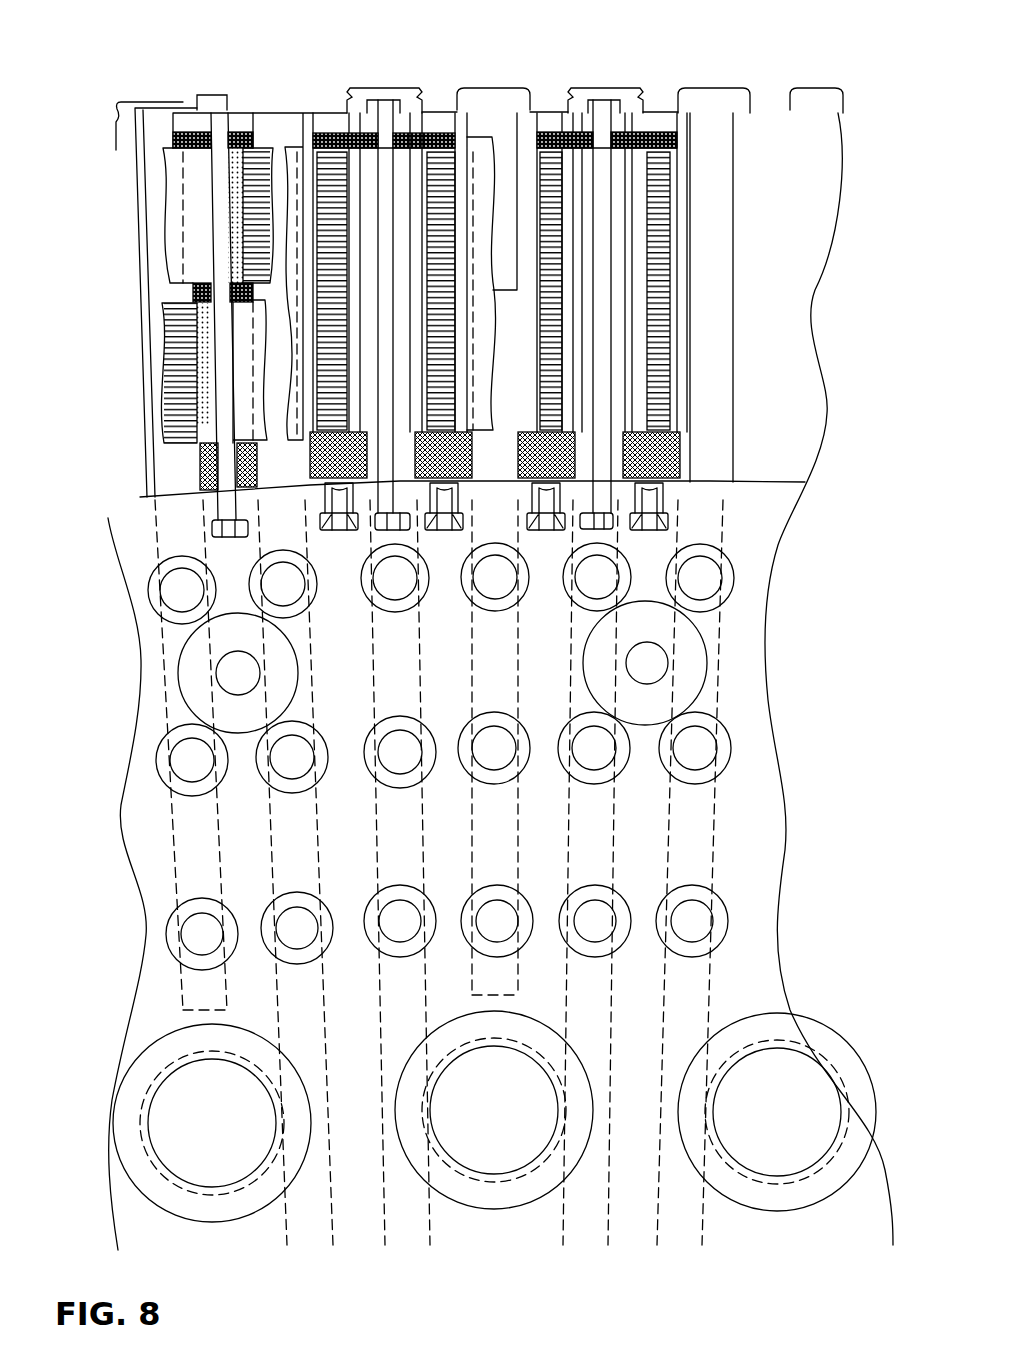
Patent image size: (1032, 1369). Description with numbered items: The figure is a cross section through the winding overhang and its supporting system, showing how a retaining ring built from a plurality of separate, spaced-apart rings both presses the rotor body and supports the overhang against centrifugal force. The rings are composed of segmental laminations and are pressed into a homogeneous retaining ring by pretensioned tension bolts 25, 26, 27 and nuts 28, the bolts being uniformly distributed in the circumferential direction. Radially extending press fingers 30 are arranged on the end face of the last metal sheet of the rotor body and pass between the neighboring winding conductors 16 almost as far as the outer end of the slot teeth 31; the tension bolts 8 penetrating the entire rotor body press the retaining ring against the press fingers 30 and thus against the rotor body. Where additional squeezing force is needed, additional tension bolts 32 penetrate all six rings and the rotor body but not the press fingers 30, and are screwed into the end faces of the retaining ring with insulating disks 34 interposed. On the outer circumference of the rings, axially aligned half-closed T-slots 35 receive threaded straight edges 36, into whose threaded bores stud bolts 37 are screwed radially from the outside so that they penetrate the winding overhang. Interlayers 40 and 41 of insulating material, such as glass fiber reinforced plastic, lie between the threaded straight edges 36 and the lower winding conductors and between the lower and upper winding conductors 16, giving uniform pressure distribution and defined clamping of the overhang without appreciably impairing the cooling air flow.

The tension bolts 8 is at (192, 1098).
The winding conductors 16 is at (228, 207).
The tension bolt 25 is at (182, 590).
The tension bolt 26 is at (192, 760).
The tension bolt 27 is at (202, 934).
The nuts 28 is at (190, 733).
The press fingers 30 is at (508, 118).
The slot teeth 31 is at (413, 108).
The additional tension bolts 32 is at (238, 673).
The insulating disks 34 is at (238, 627).
The half-closed T-slots 35 is at (663, 512).
The threaded straight edges 36 is at (667, 518).
The stud bolts 37 is at (217, 180).
The interlayer 40 is at (197, 468).
The interlayer 41 is at (237, 118).